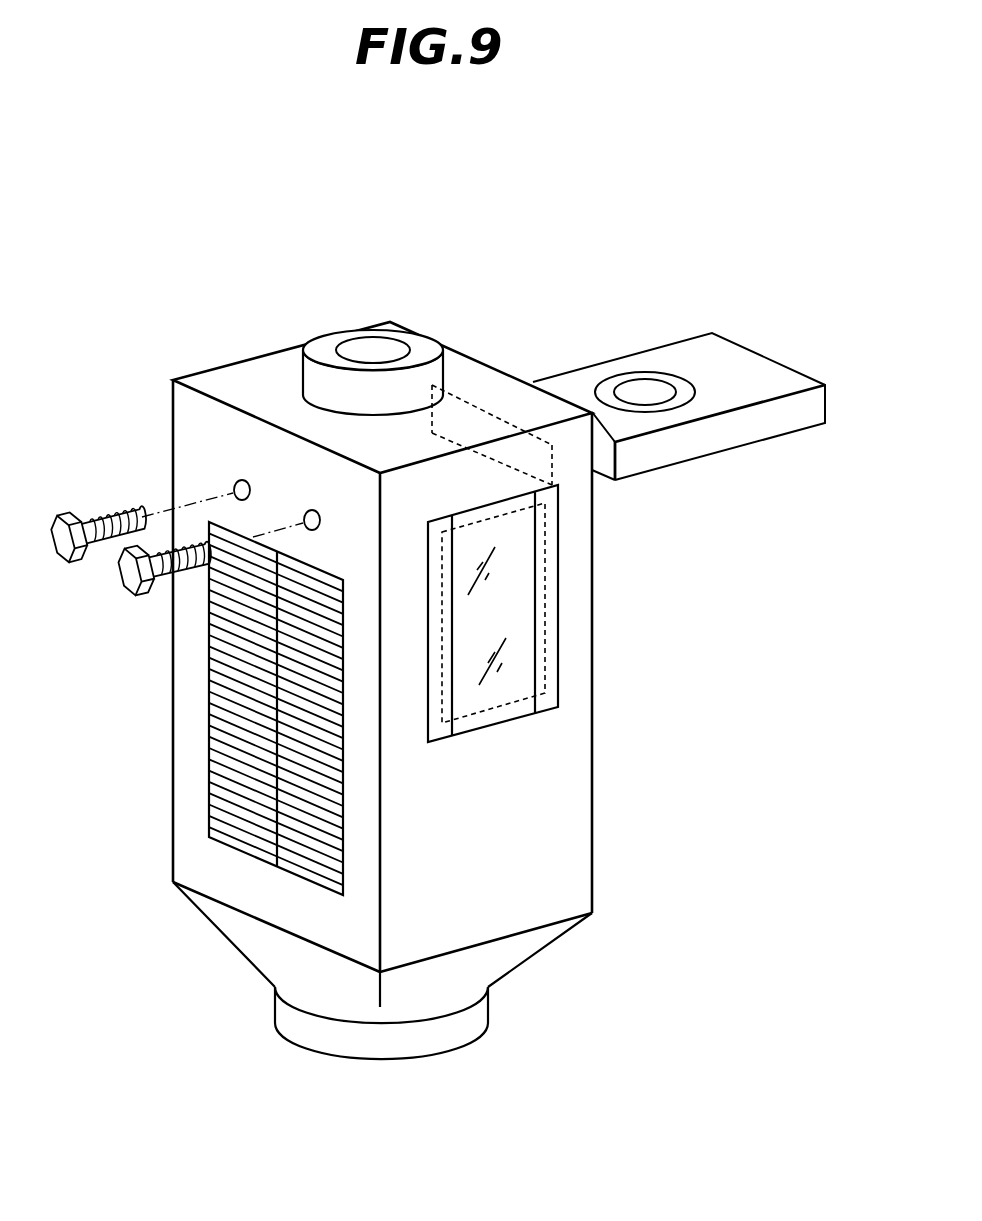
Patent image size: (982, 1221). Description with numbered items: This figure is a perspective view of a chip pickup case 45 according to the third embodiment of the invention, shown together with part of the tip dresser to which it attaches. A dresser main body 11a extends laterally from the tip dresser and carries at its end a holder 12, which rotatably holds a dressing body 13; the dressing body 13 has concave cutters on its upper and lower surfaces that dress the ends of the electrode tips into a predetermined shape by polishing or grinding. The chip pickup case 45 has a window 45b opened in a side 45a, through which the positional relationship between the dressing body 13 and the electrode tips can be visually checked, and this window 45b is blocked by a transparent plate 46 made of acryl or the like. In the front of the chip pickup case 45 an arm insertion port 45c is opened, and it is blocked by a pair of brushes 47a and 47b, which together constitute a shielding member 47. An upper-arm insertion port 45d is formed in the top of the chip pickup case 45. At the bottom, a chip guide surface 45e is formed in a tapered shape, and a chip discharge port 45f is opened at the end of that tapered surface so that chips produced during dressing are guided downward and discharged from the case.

The dresser main body 11a is at (702, 442).
The holder 12 is at (627, 372).
The dressing body 13 is at (663, 381).
The chip pickup case 45 is at (592, 793).
The side 45a is at (518, 882).
The window 45b is at (545, 618).
The arm insertion port 45c is at (207, 662).
The upper-arm insertion port 45d is at (425, 345).
The chip guide surface 45e is at (518, 955).
The chip discharge port 45f is at (462, 1020).
The transparent plate 46 is at (518, 680).
The shielding member 47 is at (242, 865).
The brush 47a is at (237, 753).
The brush 47b is at (323, 745).